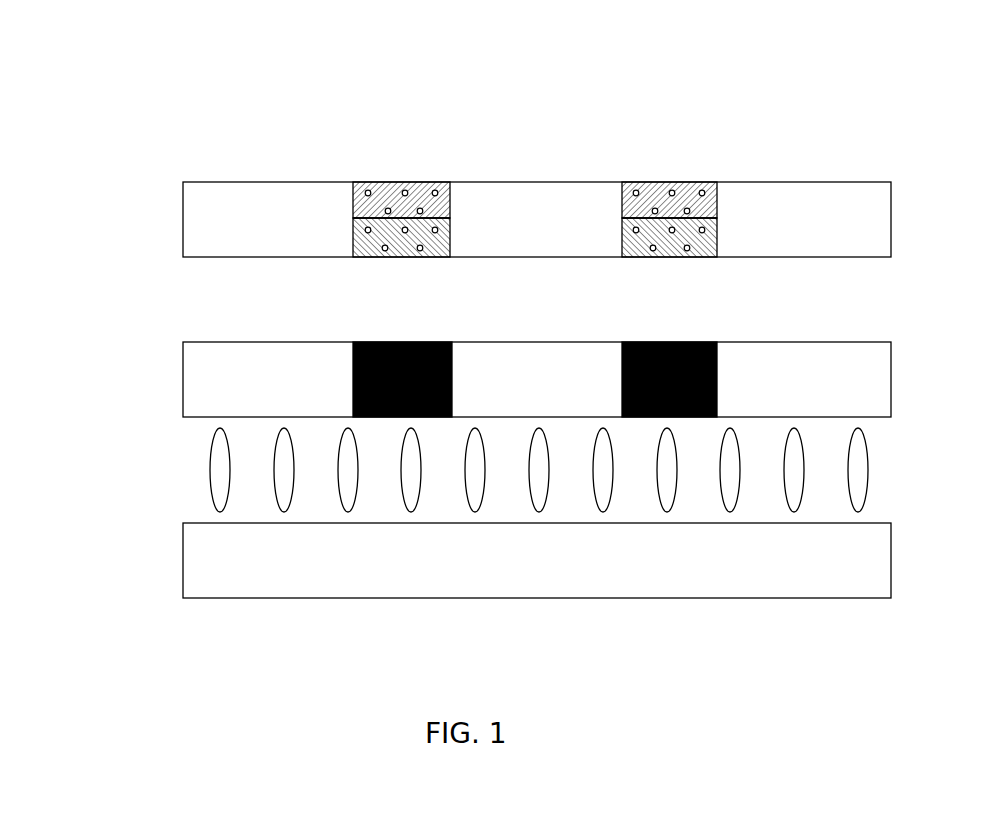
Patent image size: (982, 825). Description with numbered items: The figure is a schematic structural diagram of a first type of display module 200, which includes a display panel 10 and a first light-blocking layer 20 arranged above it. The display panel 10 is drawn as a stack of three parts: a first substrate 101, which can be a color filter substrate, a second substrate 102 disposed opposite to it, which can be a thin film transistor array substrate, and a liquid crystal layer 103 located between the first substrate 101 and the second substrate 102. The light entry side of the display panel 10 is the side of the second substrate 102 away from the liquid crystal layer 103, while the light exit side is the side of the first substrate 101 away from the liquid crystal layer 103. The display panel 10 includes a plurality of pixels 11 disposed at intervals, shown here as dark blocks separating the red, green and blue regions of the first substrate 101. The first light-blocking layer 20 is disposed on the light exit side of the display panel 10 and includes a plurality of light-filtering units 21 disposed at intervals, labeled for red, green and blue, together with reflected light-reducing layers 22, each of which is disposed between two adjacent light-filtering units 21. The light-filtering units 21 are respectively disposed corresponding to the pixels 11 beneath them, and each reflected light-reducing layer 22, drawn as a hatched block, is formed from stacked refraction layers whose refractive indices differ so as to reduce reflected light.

The display module 200 is at (229, 59).
The first light-blocking layer 20 is at (183, 226).
The light-filtering units 21 is at (307, 205).
The reflected light-reducing layers 22 is at (405, 183).
The display panel 10 is at (78, 365).
The pixels 11 is at (308, 368).
The first substrate 101 is at (207, 383).
The second substrate 102 is at (207, 564).
The liquid crystal layer 103 is at (216, 470).